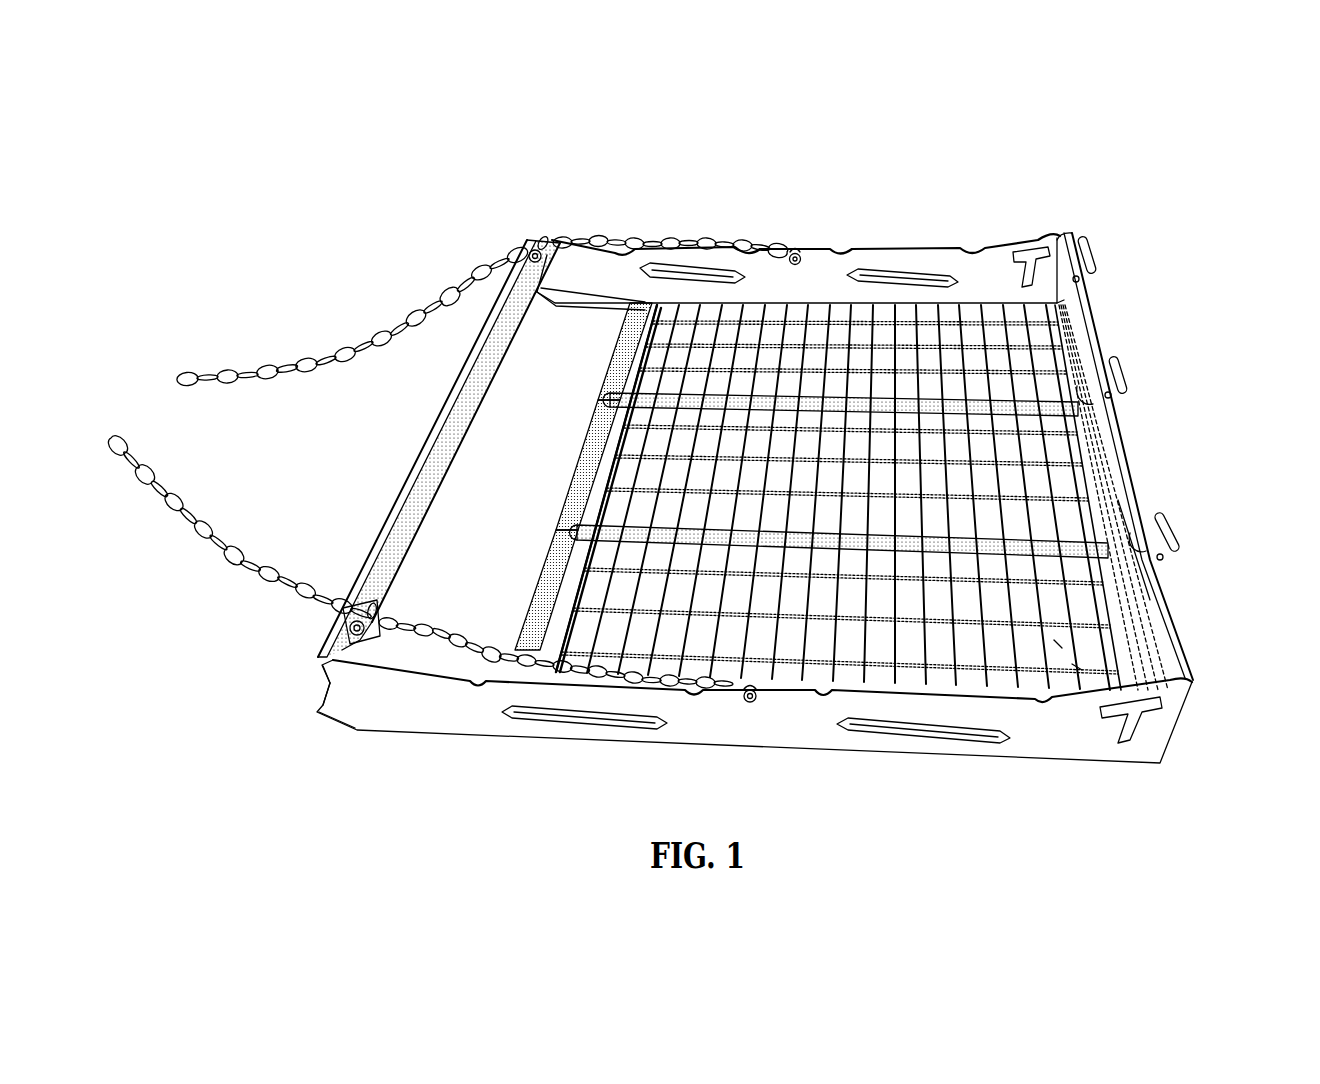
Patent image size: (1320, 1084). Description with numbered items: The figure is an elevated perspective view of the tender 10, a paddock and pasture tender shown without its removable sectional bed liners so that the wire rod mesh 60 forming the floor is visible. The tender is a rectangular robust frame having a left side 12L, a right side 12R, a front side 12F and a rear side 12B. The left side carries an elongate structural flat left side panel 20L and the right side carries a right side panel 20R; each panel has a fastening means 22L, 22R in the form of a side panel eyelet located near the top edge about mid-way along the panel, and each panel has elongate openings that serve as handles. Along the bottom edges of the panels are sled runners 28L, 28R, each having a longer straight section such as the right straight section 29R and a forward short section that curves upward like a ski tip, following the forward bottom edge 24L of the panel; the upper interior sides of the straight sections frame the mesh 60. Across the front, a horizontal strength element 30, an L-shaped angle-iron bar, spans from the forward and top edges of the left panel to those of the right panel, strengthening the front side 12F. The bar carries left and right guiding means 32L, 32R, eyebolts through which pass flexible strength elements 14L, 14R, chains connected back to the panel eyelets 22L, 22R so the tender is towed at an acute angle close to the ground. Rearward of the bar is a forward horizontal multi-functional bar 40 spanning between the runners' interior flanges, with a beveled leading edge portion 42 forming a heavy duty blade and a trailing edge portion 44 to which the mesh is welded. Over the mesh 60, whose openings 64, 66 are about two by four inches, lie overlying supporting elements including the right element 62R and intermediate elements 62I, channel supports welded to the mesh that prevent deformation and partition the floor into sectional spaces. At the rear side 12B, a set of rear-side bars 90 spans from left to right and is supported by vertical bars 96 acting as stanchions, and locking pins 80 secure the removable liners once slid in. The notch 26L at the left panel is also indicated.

The tender 10 is at (318, 212).
The right side 12R is at (655, 215).
The left side 12L is at (901, 797).
The front side 12F is at (375, 452).
The rear side 12B is at (1209, 430).
The right flexible strength element 14R is at (363, 340).
The left flexible strength element 14L is at (243, 558).
The right side panel 20R is at (915, 258).
The left side panel 20L is at (783, 727).
The right fastening means 22R is at (793, 255).
The left fastening means 22L is at (747, 697).
The left forward bottom edge 24L is at (357, 730).
The panel notch 26L is at (328, 677).
The left sled runner 28L is at (328, 693).
The right sled runner 28R is at (543, 313).
The right longer straight section 29R is at (600, 305).
The horizontal strength element 30 is at (417, 508).
The right side guiding means 32R is at (533, 243).
The left side guiding means 32L is at (377, 612).
The forward horizontal multi-functional bar 40 is at (563, 593).
The leading edge portion 42 is at (577, 470).
The trailing edge portion 44 is at (620, 430).
The wire rod mesh 60 is at (838, 487).
The right overlying supporting element 62R is at (993, 303).
The intermediate overlying supporting element 62I is at (1003, 400).
The mesh opening 64 is at (1058, 645).
The mesh opening 66 is at (1077, 667).
The locking pin 80 is at (1078, 278).
The set of rear-side bars 90 is at (1123, 517).
The vertical bar 96 is at (1077, 387).